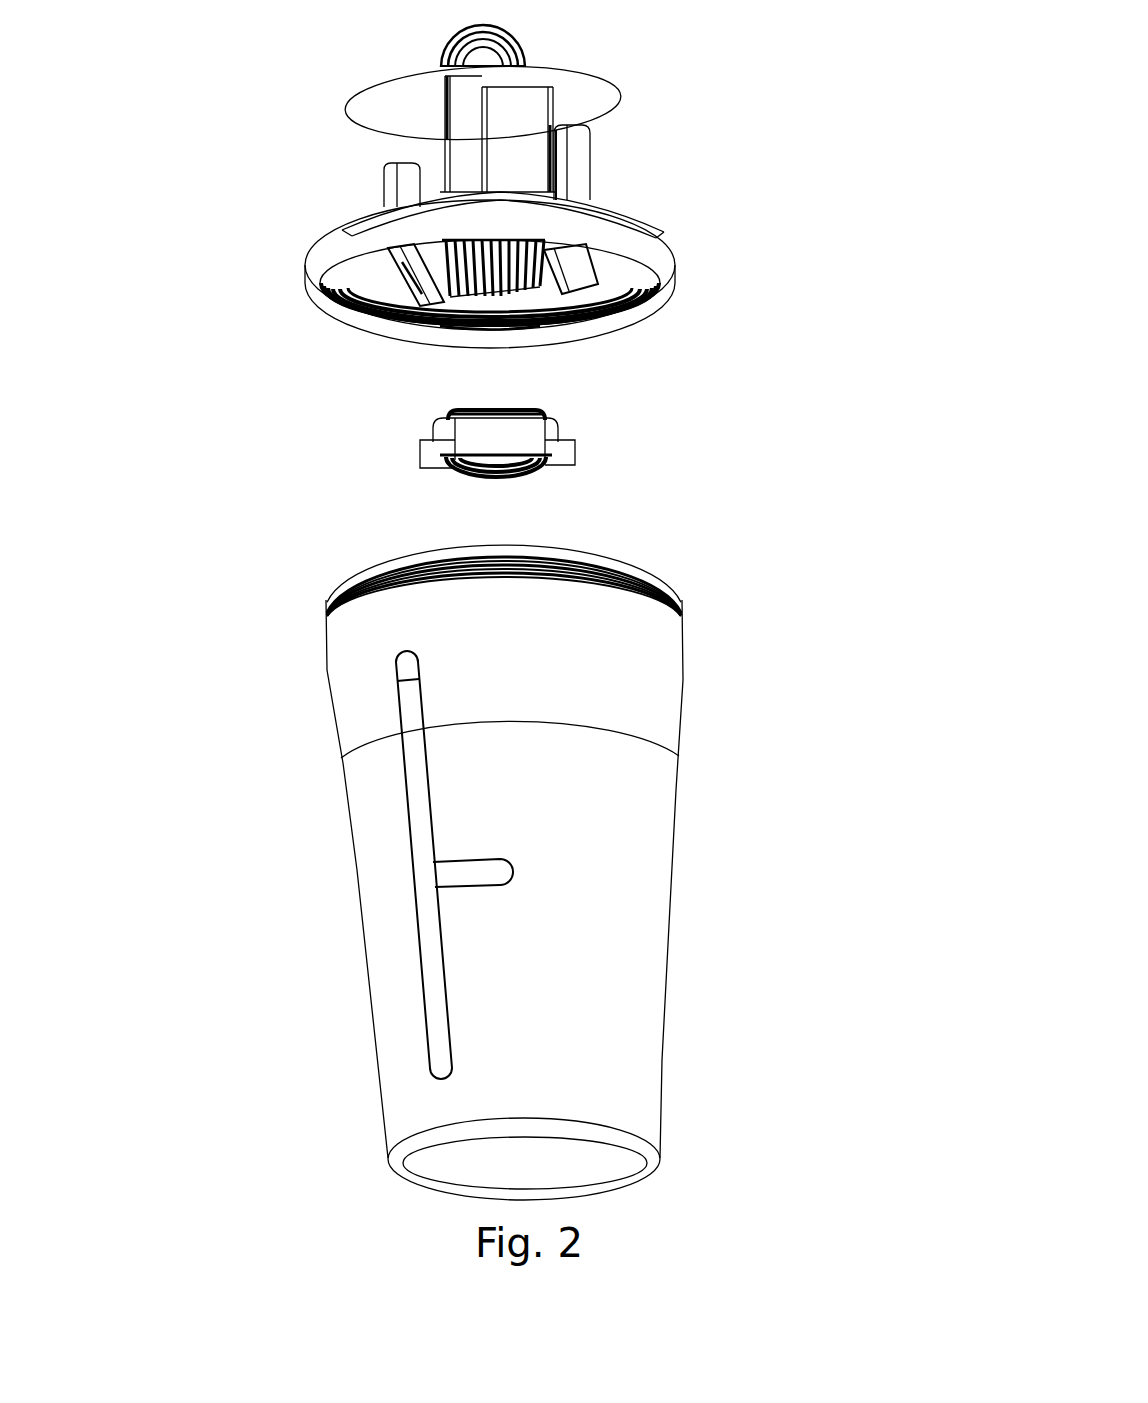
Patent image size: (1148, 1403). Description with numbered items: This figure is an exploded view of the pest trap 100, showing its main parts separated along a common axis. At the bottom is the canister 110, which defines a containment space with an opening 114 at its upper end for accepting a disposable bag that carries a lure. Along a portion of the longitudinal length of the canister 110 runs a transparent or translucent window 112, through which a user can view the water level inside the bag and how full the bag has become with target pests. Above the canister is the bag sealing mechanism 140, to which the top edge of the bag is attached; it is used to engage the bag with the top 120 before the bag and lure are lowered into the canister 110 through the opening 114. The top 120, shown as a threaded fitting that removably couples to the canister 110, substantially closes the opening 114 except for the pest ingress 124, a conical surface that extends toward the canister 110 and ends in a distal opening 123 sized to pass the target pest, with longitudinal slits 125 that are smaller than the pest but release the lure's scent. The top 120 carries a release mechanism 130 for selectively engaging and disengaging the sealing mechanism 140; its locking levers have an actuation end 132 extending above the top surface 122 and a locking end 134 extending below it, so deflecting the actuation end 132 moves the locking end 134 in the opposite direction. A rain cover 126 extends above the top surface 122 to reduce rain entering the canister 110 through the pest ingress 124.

The pest trap 100 is at (172, 95).
The canister 110 is at (563, 830).
The window 112 is at (410, 828).
The opening 114 is at (425, 540).
The top 120 is at (569, 312).
The top surface 122 is at (490, 192).
The distal opening 123 is at (475, 322).
The pest ingress 124 is at (560, 315).
The longitudinal slits 125 is at (490, 282).
The rain cover 126 is at (580, 90).
The release mechanism 130 is at (392, 279).
The actuation end 132 is at (590, 127).
The locking end 134 is at (410, 320).
The bag sealing mechanism 140 is at (586, 436).